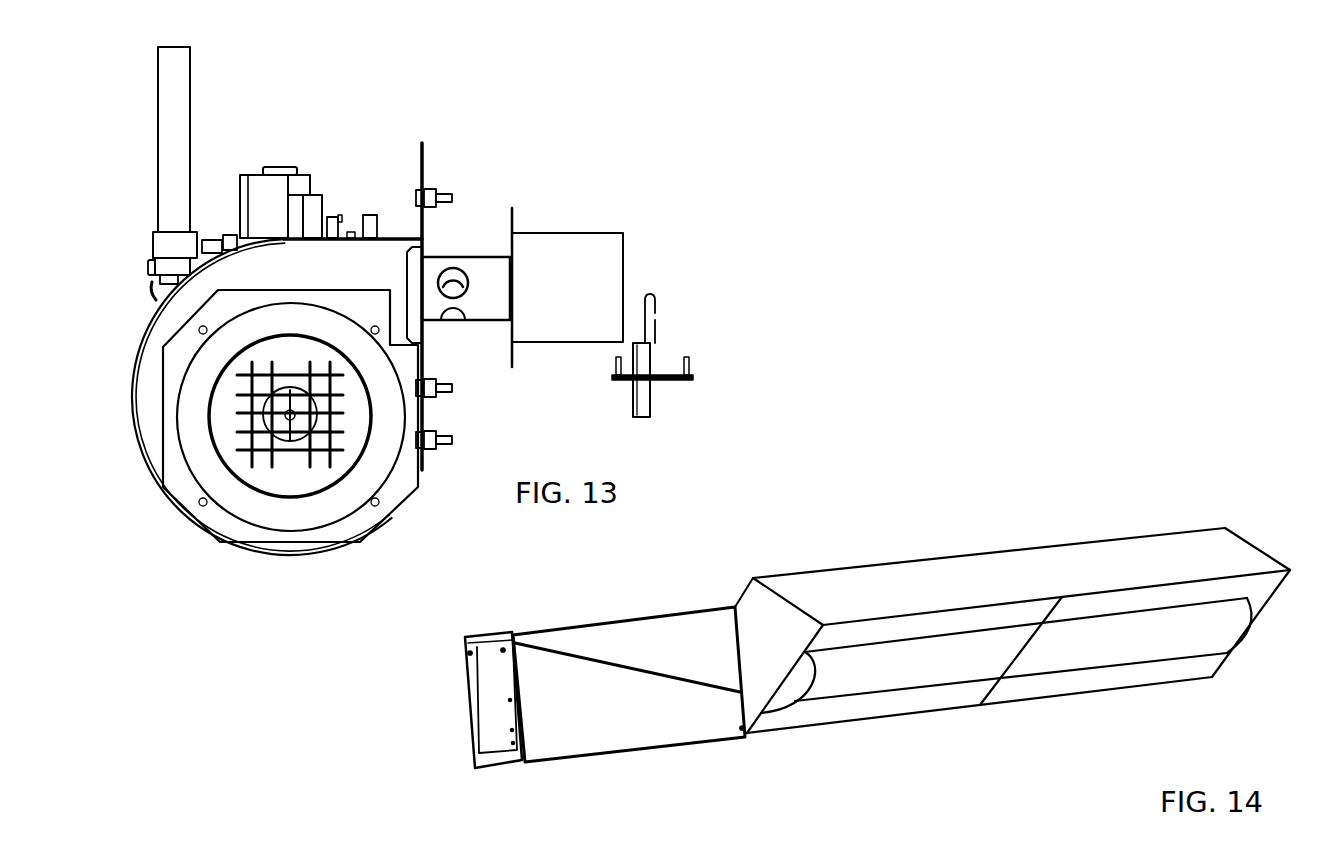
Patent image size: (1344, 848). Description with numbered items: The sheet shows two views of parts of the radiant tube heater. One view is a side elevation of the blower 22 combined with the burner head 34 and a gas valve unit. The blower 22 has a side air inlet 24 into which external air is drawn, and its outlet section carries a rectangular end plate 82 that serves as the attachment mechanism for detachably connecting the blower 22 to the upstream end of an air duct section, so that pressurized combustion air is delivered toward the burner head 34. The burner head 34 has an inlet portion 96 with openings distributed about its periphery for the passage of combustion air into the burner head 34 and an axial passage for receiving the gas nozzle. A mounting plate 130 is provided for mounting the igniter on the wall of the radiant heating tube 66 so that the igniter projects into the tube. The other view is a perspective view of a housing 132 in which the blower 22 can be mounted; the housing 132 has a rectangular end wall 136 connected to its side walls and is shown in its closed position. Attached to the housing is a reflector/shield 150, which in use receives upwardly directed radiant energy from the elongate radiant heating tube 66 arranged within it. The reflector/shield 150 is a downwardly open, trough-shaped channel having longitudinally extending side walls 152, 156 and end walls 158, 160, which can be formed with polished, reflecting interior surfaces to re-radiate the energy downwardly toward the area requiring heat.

In FIG. 13, the blower 22 is at (148, 418).
In FIG. 13, the air inlet 24 is at (257, 490).
In FIG. 13, the rectangular end plate 82 is at (420, 158).
In FIG. 13, the inlet portion 96 is at (483, 256).
In FIG. 13, the burner head 34 is at (557, 238).
In FIG. 13, the mounting plate 130 is at (678, 383).
In FIG. 14, the housing 132 is at (431, 700).
In FIG. 14, the rectangular end wall 136 is at (475, 673).
In FIG. 14, the side wall 152 is at (633, 657).
In FIG. 14, the end wall 158 is at (743, 626).
In FIG. 14, the reflector/shield 150 is at (1036, 621).
In FIG. 14, the side wall 156 is at (878, 593).
In FIG. 14, the radiant heating tube 66 is at (1080, 645).
In FIG. 14, the end wall 160 is at (1265, 585).